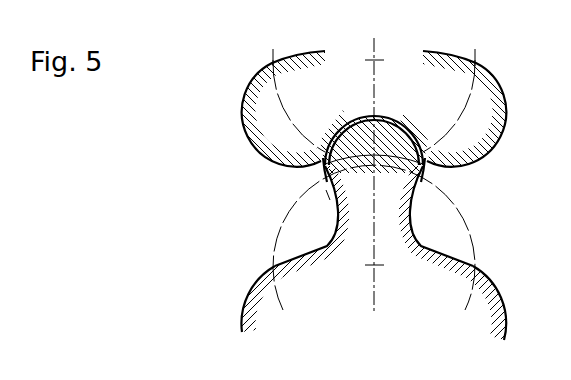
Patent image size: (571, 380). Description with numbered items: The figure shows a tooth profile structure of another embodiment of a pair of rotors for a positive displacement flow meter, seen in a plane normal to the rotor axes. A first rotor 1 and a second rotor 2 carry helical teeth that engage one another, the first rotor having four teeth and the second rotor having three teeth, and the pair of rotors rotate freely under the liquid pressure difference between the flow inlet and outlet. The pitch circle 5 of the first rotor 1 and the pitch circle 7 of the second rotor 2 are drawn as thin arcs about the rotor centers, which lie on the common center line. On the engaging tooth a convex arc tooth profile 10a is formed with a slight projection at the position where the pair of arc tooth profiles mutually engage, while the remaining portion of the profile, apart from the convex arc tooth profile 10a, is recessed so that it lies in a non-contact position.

The first rotor 1 is at (400, 88).
The second rotor 2 is at (395, 250).
The pitch circle of the first rotor 5 is at (477, 58).
The pitch circle of the second rotor 7 is at (473, 249).
The convex arc tooth profile 10a is at (325, 172).